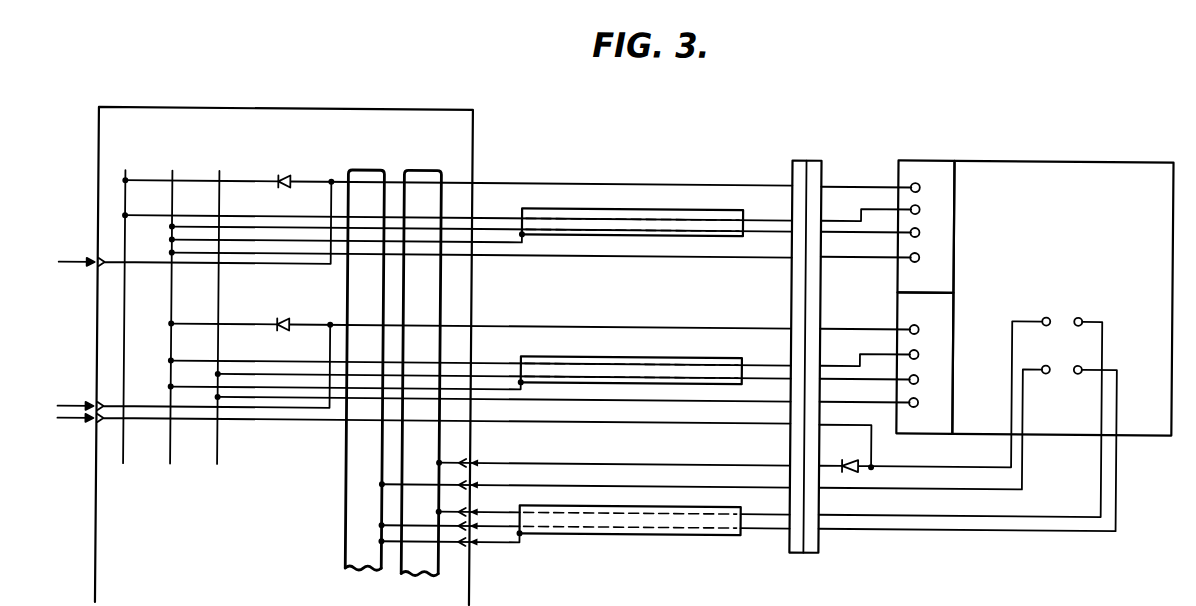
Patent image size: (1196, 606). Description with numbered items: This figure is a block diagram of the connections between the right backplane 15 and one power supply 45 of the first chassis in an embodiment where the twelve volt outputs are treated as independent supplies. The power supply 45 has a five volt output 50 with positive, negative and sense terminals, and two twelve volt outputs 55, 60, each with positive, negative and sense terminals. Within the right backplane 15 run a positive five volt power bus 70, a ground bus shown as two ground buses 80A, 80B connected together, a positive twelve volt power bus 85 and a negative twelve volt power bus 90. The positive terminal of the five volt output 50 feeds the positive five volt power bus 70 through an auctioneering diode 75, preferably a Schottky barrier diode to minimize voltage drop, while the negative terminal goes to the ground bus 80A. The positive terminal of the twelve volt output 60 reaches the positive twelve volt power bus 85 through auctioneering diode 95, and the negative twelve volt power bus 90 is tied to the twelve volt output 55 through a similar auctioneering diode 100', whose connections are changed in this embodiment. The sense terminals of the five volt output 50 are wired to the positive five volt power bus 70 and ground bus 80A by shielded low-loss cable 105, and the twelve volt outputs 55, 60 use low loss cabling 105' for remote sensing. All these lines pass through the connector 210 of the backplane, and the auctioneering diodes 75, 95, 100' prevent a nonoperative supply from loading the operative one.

The right backplane 15 is at (462, 134).
The power supply 45 is at (1013, 294).
The five volt output 50 is at (1150, 424).
The twelve volt output 55 is at (940, 428).
The twelve volt output 60 is at (902, 277).
The positive five volt power bus 70 is at (404, 575).
The auctioneering diode 75 is at (847, 459).
The ground bus 80A is at (353, 533).
The ground bus 80B is at (172, 451).
The positive twelve volt power bus 85 is at (124, 458).
The negative twelve volt power bus 90 is at (219, 437).
The auctioneering diode 95 is at (283, 177).
The auctioneering diode 100' is at (298, 306).
The shielded low-loss cable 105 is at (629, 535).
The low loss cabling 105' is at (632, 296).
The connector 210 is at (808, 552).